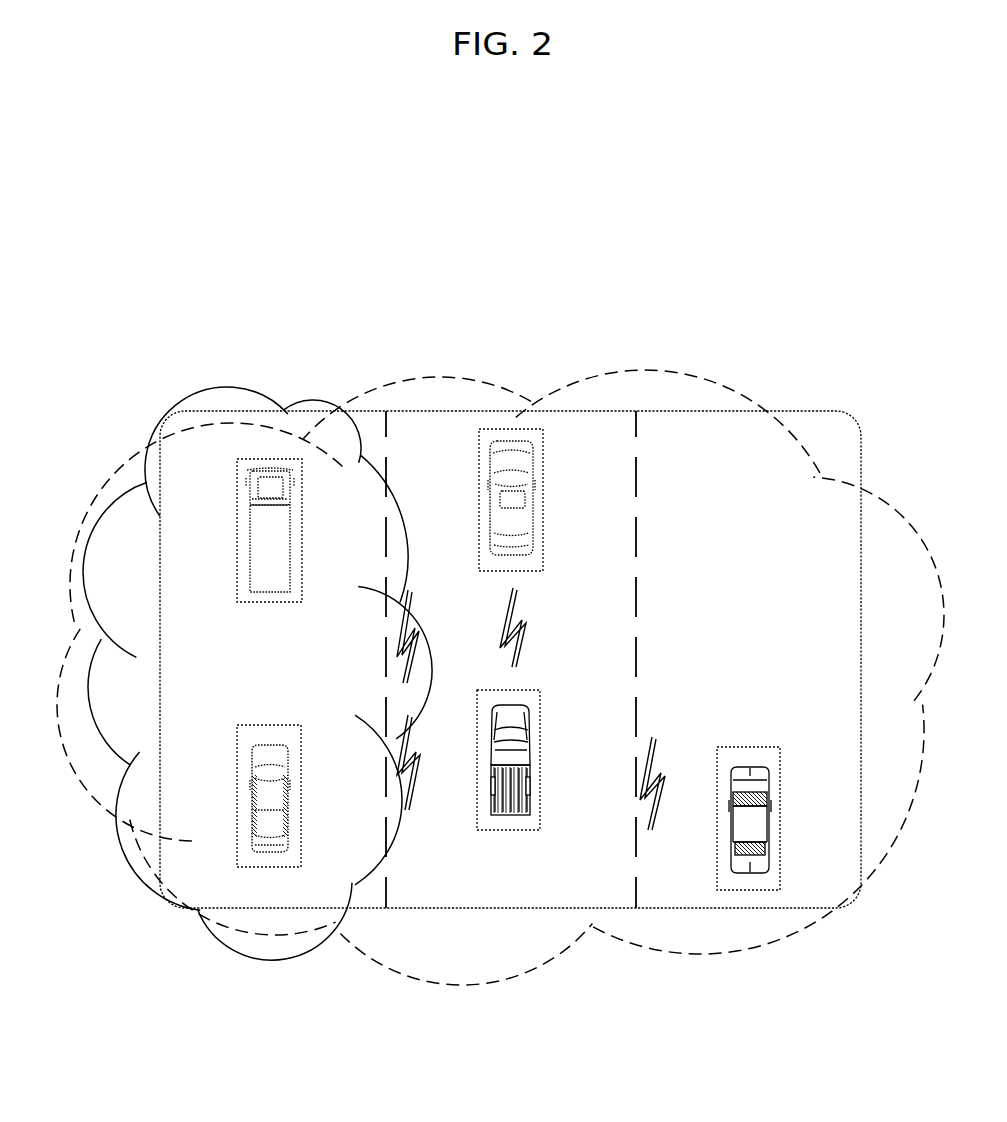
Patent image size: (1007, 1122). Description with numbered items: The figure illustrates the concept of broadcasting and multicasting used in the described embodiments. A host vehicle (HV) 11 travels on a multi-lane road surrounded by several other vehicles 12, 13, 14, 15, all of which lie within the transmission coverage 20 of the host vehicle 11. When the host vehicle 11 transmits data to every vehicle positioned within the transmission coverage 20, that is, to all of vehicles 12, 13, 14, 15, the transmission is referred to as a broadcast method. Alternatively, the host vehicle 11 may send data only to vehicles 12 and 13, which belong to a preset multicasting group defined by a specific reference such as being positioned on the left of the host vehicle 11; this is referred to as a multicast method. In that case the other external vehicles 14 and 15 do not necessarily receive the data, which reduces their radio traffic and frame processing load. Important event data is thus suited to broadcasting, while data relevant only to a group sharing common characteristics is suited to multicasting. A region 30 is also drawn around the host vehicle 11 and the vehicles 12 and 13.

The host vehicle 11 is at (515, 750).
The vehicle 12 is at (266, 797).
The vehicle 13 is at (258, 533).
The external vehicle 14 is at (517, 517).
The external vehicle 15 is at (752, 826).
The transmission coverage 20 is at (466, 379).
The communication range of host vehicle 30 is at (273, 960).